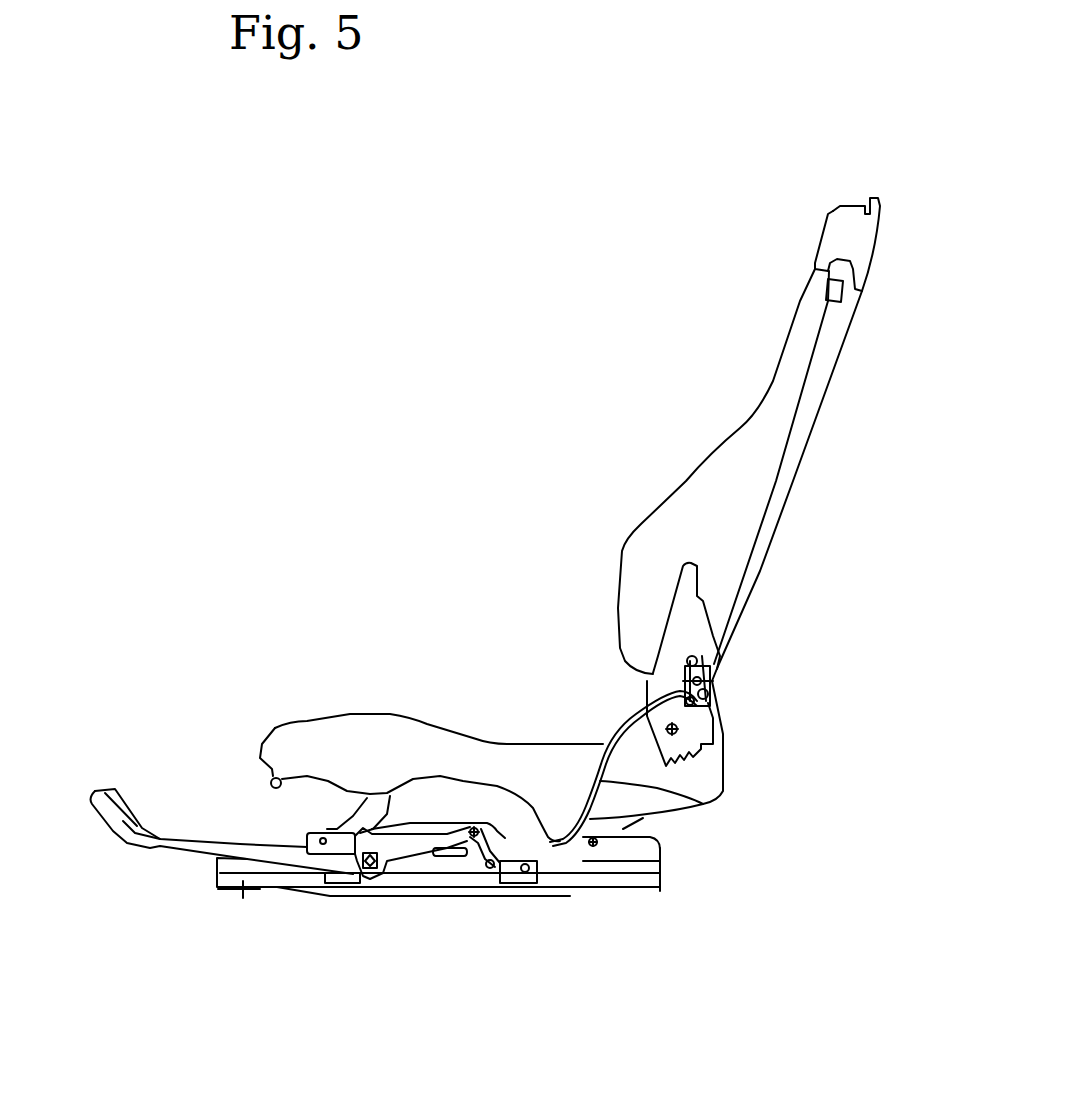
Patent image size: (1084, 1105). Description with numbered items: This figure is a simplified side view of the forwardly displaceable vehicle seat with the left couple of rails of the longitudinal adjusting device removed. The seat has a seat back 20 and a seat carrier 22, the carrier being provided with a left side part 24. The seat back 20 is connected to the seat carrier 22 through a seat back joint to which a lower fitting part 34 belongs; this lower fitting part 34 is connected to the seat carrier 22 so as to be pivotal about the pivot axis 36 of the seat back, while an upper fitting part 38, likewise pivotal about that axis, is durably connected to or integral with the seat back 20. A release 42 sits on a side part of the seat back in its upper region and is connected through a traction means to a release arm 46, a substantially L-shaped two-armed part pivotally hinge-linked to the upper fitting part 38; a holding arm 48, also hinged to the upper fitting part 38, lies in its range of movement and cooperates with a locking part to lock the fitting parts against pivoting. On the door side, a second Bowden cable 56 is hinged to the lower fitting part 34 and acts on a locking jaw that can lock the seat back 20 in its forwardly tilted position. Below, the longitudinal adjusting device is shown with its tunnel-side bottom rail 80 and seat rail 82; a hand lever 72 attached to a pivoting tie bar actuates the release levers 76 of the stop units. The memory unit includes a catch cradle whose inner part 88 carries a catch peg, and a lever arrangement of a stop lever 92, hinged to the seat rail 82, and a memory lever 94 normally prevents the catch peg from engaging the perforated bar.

The seat back 20 is at (806, 428).
The seat carrier 22 is at (347, 700).
The left side part 24 is at (427, 737).
The lower fitting part 34 is at (683, 740).
The pivot axis 36 is at (690, 723).
The upper fitting part 38 is at (690, 618).
The release 42 is at (843, 290).
The release arm 46 is at (680, 662).
The holding arm 48 is at (712, 672).
The second Bowden cable 56 is at (703, 803).
The hand lever 72 is at (125, 817).
The release lever 76 is at (400, 858).
The bottom rail 80 is at (663, 857).
The seat rail 82 is at (657, 840).
The inner part 88 is at (512, 880).
The stop lever 92 is at (478, 862).
The memory lever 94 is at (567, 877).